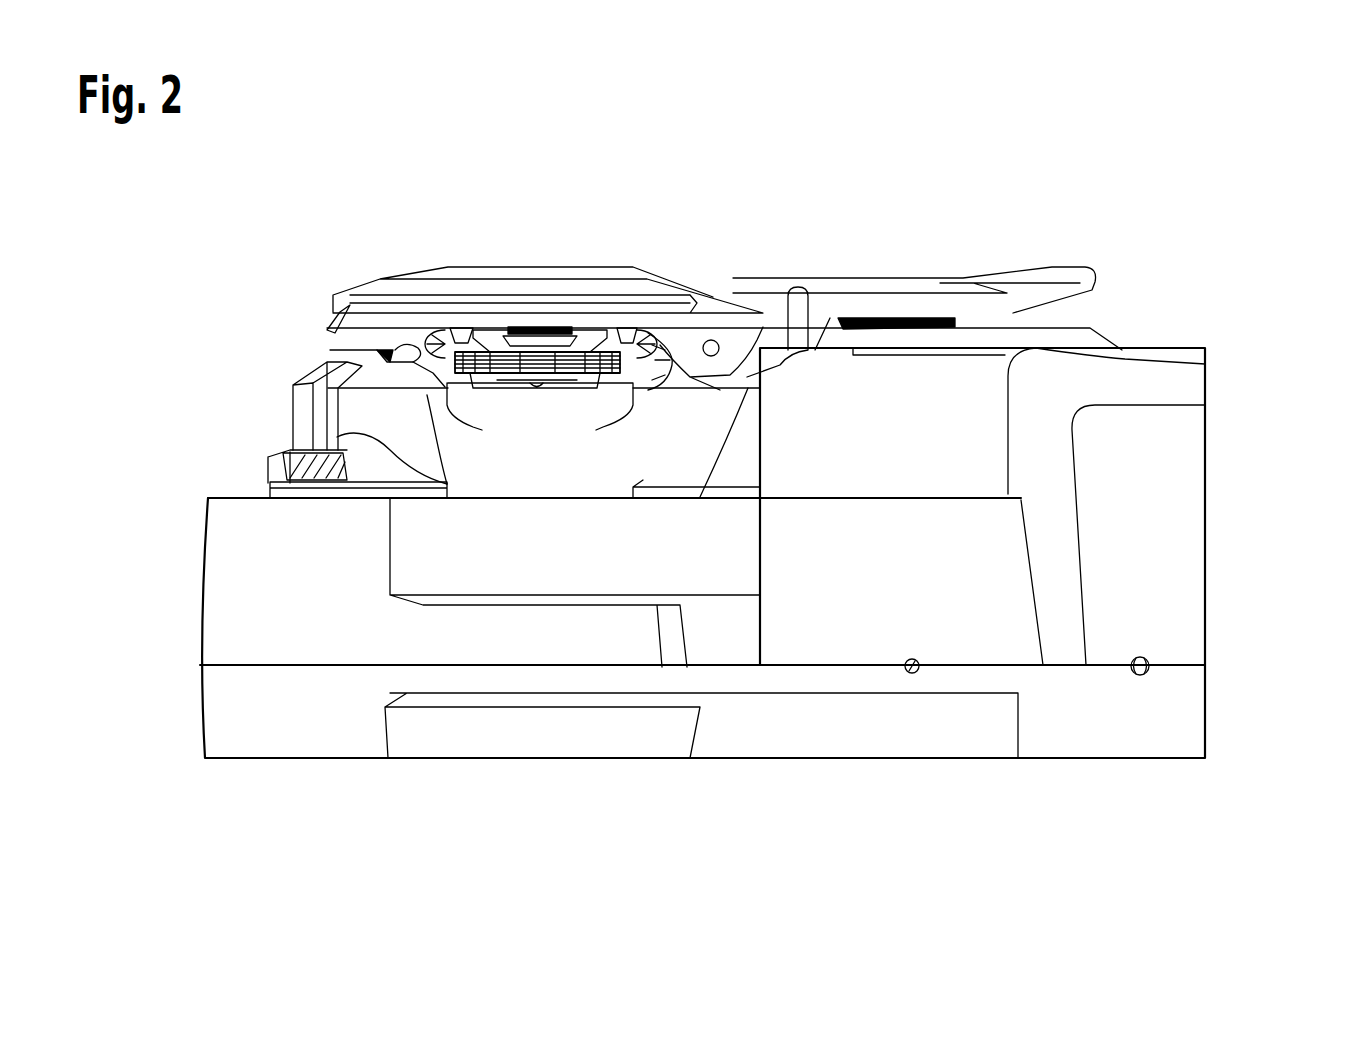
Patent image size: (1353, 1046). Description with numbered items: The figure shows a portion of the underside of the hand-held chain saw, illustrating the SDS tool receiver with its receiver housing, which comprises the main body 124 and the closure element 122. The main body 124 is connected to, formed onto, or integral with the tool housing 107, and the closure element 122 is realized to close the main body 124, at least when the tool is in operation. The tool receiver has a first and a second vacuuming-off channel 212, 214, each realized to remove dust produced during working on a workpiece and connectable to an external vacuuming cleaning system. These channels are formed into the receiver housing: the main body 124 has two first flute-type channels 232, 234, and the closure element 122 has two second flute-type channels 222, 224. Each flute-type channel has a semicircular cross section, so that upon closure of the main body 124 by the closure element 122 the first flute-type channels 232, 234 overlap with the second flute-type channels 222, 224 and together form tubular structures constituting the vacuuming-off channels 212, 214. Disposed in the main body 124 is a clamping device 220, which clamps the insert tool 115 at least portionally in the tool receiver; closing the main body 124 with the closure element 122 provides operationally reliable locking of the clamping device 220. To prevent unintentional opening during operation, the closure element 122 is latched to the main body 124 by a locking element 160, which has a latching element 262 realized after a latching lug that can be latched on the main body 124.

The tool housing 107 is at (1164, 576).
The insert tool 115 is at (492, 392).
The closure element 122 is at (353, 340).
The main body 124 is at (403, 410).
The locking element 160 is at (1035, 276).
The first vacuuming-off channel 212 is at (708, 297).
The second vacuuming-off channel 214 is at (407, 340).
The clamping device 220 is at (531, 393).
The second flute-type channel 222 is at (640, 343).
The second flute-type channel 224 is at (438, 340).
The first flute-type channel 232 is at (645, 392).
The first flute-type channel 234 is at (293, 382).
The latching element 262 is at (806, 330).